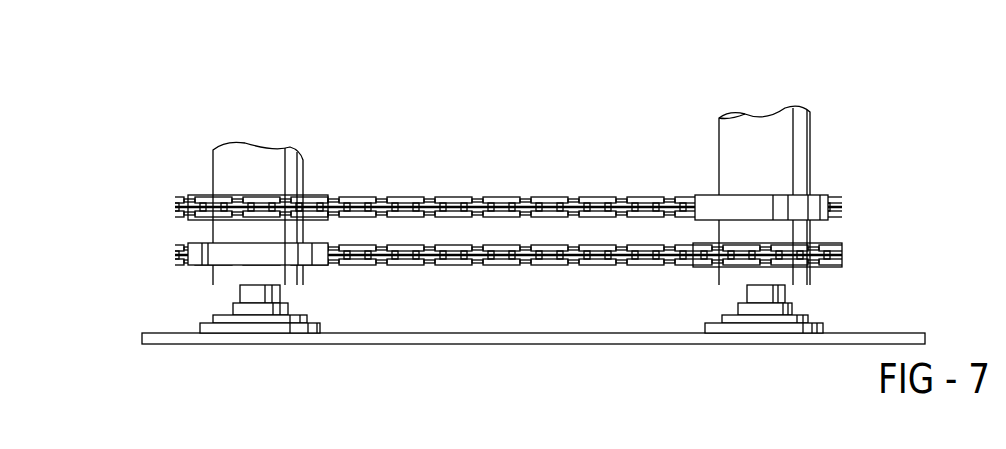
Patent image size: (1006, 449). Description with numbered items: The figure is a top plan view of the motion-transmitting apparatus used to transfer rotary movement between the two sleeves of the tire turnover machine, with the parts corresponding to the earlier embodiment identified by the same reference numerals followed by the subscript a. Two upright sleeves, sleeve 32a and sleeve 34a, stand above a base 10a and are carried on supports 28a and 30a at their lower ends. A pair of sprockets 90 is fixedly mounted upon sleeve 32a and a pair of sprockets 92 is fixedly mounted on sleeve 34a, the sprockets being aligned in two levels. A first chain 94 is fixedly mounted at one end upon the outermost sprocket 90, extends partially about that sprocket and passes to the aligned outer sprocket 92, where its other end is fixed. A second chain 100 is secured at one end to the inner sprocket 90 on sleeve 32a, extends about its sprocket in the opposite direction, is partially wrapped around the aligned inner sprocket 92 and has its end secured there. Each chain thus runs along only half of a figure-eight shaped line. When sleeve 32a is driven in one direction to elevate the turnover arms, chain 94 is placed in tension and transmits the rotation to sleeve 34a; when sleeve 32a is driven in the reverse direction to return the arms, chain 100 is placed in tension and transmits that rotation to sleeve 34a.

The base plate 10a is at (577, 344).
The left pedestal mount 28a is at (281, 295).
The right pedestal mount 30a is at (746, 293).
The sleeve 32a is at (304, 161).
The sleeve 34a is at (811, 147).
The sprockets 90 is at (225, 196).
The sprockets 92 is at (822, 200).
The first chain 94 is at (488, 265).
The second chain 100 is at (489, 199).